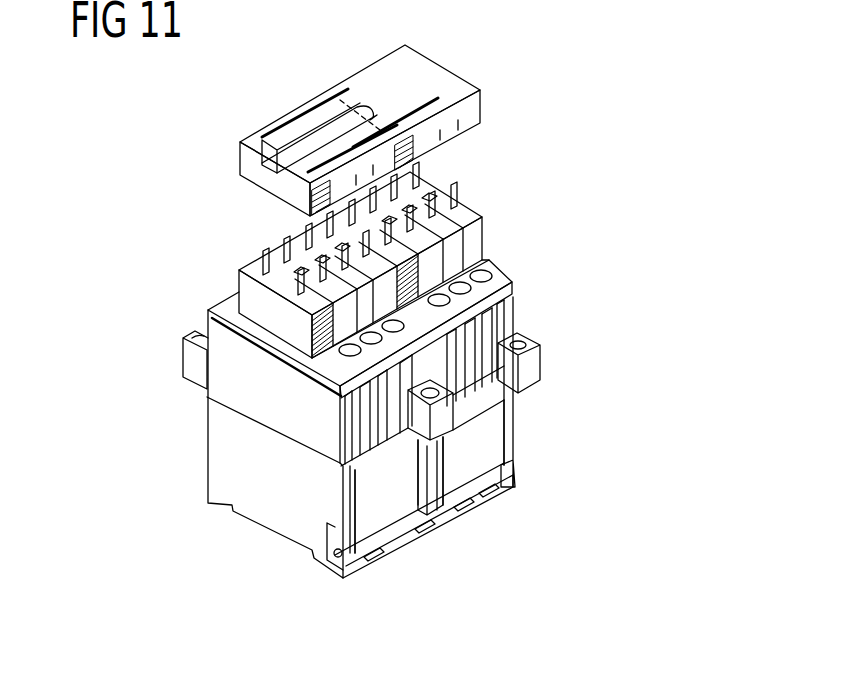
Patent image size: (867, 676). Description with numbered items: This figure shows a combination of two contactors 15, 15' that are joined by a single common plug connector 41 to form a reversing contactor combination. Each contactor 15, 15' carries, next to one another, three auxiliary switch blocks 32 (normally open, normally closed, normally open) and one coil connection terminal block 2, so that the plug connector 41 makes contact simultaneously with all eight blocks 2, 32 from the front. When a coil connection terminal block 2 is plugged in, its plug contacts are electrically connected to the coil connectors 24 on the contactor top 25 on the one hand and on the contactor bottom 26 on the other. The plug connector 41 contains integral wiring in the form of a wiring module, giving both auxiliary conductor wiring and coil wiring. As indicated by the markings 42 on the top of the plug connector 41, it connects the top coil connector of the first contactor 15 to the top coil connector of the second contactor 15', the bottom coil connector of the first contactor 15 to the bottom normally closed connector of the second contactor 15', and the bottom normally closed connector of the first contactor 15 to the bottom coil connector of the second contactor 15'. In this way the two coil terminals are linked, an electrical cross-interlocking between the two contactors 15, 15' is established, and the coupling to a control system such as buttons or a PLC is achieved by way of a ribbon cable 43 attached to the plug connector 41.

The coil connection terminal block 2 is at (275, 308).
The contactor 15 is at (338, 430).
The second contactor 15' is at (556, 394).
The coil connector 24 is at (192, 362).
The contactor top 25 is at (210, 447).
The contactor bottom 26 is at (377, 493).
The auxiliary switch block 32 is at (468, 213).
The plug connector 41 is at (482, 105).
The markings 42 is at (413, 111).
The ribbon cable 43 is at (287, 157).